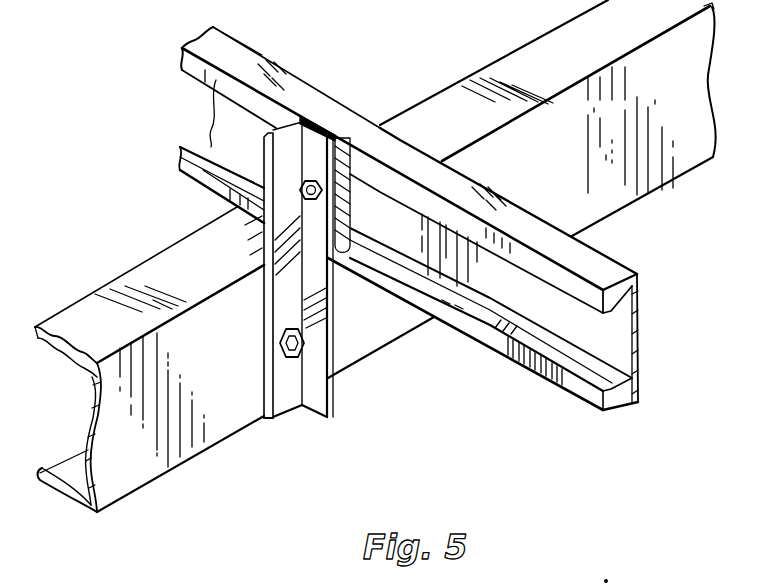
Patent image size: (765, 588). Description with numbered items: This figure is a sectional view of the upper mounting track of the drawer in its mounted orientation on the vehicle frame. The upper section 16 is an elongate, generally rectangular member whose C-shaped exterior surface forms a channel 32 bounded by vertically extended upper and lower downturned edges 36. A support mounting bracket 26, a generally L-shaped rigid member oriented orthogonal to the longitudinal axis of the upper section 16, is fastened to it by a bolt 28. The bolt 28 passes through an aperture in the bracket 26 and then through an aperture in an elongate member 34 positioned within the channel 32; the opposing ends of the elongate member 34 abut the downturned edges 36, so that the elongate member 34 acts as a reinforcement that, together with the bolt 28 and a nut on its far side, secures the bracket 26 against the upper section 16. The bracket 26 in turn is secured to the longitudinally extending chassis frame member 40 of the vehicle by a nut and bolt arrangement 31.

The upper section 16 is at (606, 266).
The support mounting bracket 26 is at (337, 402).
The bolt 28 is at (317, 181).
The nut and bolt arrangement 31 is at (296, 358).
The channel 32 is at (207, 117).
The elongate member 34 is at (342, 172).
The downturned edges 36 is at (560, 287).
The chassis frame member 40 is at (222, 388).